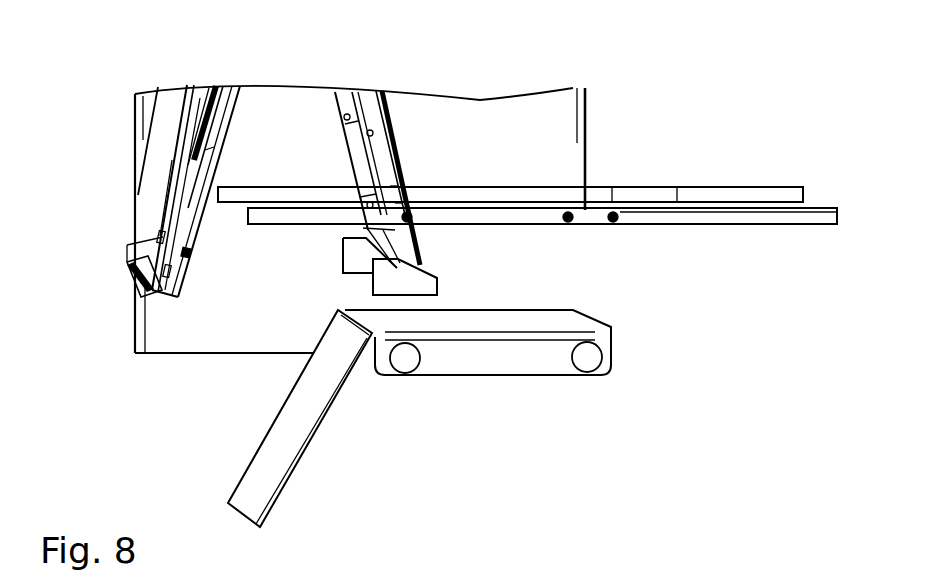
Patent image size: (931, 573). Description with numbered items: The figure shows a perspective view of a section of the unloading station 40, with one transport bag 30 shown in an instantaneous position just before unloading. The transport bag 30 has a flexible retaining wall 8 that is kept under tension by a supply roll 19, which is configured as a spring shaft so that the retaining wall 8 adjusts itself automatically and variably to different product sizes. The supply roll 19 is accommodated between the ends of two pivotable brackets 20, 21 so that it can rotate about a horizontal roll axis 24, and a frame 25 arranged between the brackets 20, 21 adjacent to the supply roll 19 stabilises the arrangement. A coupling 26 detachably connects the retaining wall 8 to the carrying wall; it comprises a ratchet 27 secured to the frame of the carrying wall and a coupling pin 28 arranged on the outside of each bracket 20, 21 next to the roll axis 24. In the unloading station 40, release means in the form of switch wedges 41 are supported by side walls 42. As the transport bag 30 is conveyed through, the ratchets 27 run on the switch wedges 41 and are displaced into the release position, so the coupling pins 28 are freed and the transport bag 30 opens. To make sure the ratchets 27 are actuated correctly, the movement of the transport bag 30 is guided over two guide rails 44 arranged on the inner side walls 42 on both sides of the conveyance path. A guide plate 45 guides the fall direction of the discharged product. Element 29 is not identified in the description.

The retaining wall 8 is at (152, 150).
The supply roll 19 is at (181, 288).
The bracket 20 is at (200, 90).
The bracket 21 is at (185, 186).
The roll axis 24 is at (150, 262).
The frame 25 is at (135, 282).
The coupling 26 is at (414, 190).
The ratchet 27 is at (405, 256).
The coupling pin 28 is at (152, 243).
The guide rail 29 is at (183, 124).
The transport bag 30 is at (246, 103).
The unloading station 40 is at (414, 124).
The switch wedge 41 is at (427, 287).
The side wall 42 is at (308, 97).
The guide rail 44 is at (817, 217).
The guide plate 45 is at (283, 420).